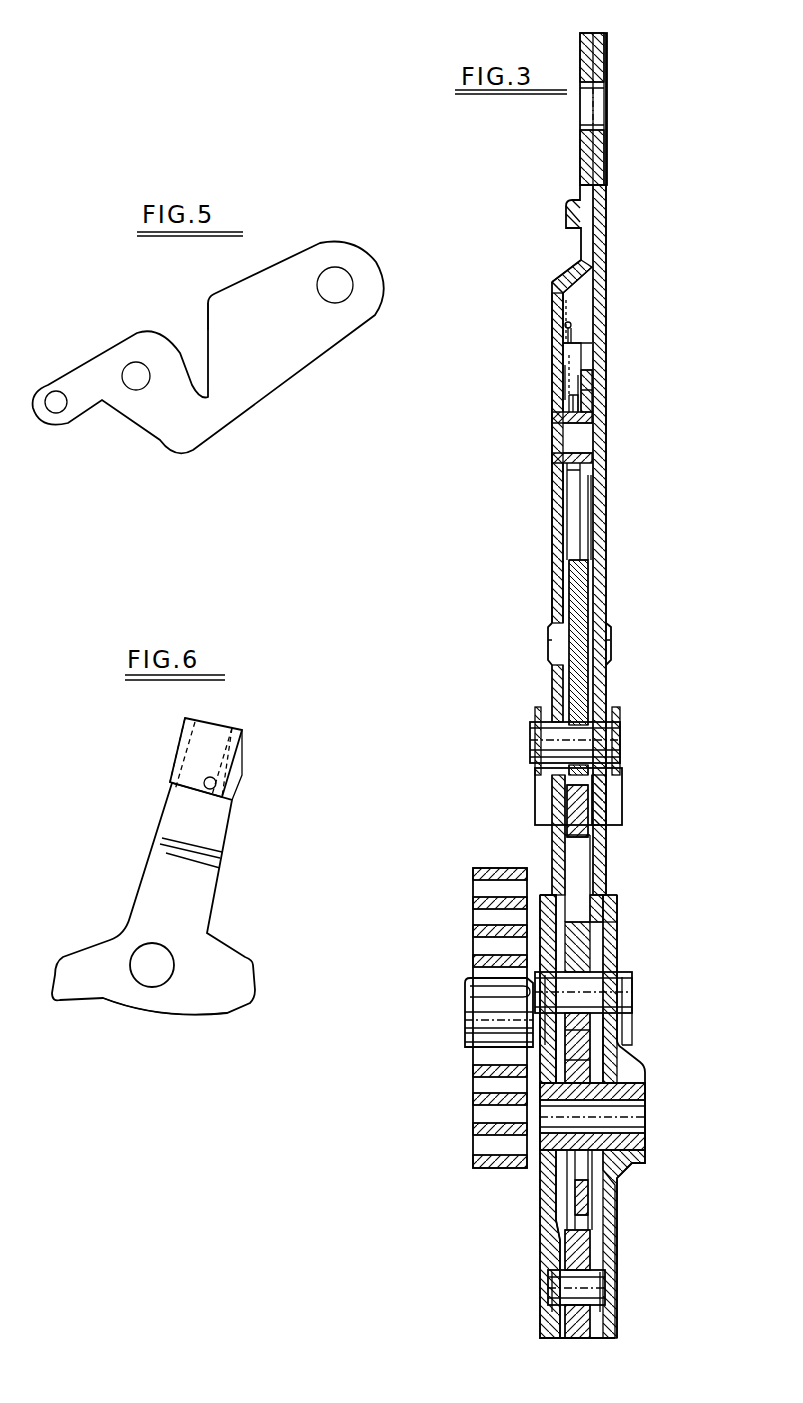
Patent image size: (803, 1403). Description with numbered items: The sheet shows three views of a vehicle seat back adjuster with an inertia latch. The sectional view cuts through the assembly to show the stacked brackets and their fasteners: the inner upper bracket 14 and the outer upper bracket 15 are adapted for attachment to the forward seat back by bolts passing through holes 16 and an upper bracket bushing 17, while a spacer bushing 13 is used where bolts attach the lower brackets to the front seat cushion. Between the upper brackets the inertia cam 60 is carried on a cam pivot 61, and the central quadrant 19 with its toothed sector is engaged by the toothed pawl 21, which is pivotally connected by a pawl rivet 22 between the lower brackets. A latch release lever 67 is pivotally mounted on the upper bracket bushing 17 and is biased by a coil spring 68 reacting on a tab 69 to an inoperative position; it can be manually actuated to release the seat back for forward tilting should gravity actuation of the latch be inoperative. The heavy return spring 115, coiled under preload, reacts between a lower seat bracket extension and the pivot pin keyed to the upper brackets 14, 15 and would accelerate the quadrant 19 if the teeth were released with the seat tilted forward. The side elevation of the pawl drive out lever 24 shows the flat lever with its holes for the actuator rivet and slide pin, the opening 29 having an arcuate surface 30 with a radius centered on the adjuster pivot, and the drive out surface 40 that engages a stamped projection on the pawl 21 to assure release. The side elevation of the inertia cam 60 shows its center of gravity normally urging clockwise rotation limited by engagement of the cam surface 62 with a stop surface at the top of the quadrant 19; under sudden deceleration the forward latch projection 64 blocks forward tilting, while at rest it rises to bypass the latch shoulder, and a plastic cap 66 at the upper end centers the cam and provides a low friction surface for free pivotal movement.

In FIG. 3, the spacer bushing 13 is at (623, 1095).
In FIG. 3, the inner upper bracket 14 is at (598, 367).
In FIG. 3, the outer upper bracket 15 is at (552, 300).
In FIG. 3, the holes 16 is at (600, 107).
In FIG. 3, the upper bracket bushing 17 is at (590, 425).
In FIG. 3, the central quadrant 19 is at (582, 1202).
In FIG. 3, the toothed pawl 21 is at (582, 1257).
In FIG. 3, the pawl rivet 22 is at (582, 1287).
In FIG. 5, the pawl drive out lever 24 is at (287, 372).
In FIG. 3, the opening 29 is at (577, 1163).
In FIG. 3, the arcuate surface 30 is at (577, 1182).
In FIG. 5, the drive out surface 40 is at (202, 322).
In FIG. 3, the inertia cam 60 is at (577, 695).
In FIG. 6, the inertia cam 60 is at (205, 890).
In FIG. 3, the cam pivot 61 is at (613, 740).
In FIG. 3, the cam surface 62 is at (578, 792).
In FIG. 6, the cam surface 62 is at (222, 1013).
In FIG. 6, the forward latch projection 64 is at (67, 995).
In FIG. 6, the plastic cap 66 is at (227, 737).
In FIG. 3, the latch release lever 67 is at (587, 397).
In FIG. 3, the coil spring 68 is at (572, 392).
In FIG. 3, the tab 69 is at (577, 330).
In FIG. 3, the return spring 115 is at (464, 933).